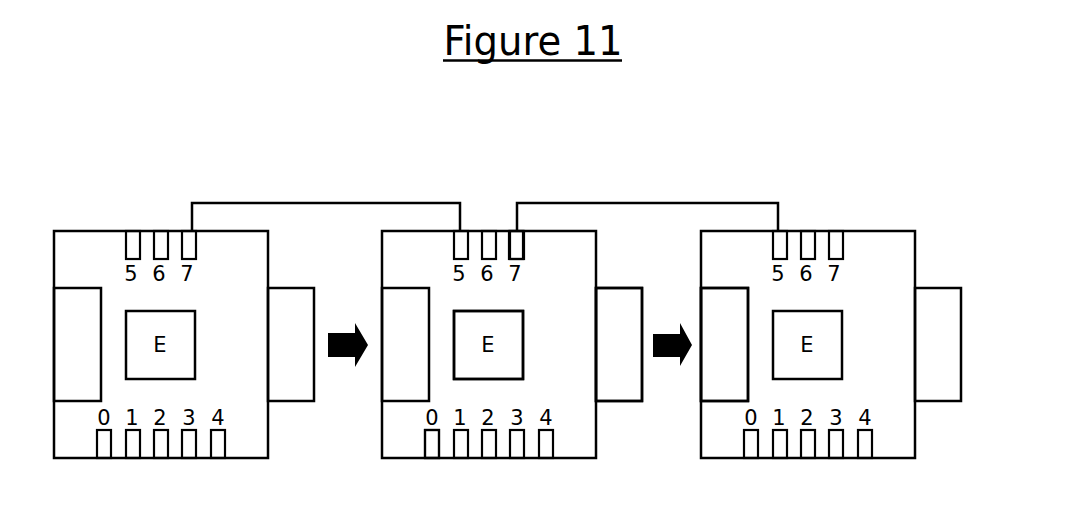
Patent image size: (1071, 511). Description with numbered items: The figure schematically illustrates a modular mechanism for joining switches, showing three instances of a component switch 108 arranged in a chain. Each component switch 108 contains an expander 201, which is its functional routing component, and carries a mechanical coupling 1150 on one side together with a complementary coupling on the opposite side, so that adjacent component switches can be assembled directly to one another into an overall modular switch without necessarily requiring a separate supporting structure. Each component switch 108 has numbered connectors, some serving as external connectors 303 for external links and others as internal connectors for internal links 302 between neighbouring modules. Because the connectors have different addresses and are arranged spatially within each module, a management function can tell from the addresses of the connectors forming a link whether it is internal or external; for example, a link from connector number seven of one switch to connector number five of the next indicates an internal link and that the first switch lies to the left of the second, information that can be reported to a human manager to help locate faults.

The component switch 108 is at (86, 231).
The interconnect link 302 is at (683, 202).
The external connector 303 is at (423, 447).
The expander 201 is at (522, 322).
The mechanical coupling 1150 is at (622, 394).